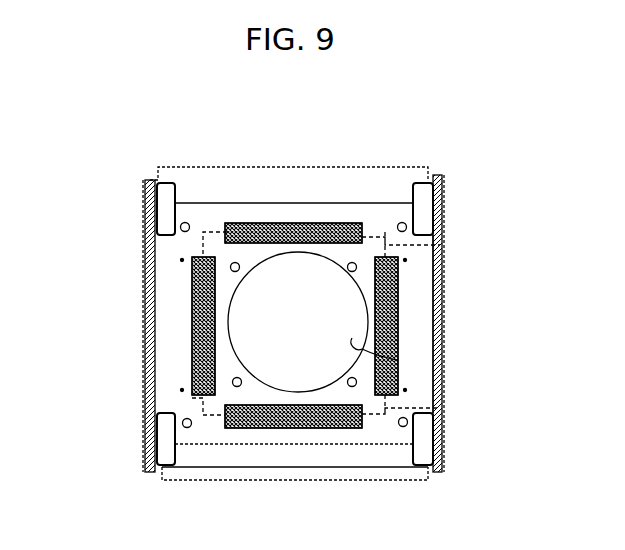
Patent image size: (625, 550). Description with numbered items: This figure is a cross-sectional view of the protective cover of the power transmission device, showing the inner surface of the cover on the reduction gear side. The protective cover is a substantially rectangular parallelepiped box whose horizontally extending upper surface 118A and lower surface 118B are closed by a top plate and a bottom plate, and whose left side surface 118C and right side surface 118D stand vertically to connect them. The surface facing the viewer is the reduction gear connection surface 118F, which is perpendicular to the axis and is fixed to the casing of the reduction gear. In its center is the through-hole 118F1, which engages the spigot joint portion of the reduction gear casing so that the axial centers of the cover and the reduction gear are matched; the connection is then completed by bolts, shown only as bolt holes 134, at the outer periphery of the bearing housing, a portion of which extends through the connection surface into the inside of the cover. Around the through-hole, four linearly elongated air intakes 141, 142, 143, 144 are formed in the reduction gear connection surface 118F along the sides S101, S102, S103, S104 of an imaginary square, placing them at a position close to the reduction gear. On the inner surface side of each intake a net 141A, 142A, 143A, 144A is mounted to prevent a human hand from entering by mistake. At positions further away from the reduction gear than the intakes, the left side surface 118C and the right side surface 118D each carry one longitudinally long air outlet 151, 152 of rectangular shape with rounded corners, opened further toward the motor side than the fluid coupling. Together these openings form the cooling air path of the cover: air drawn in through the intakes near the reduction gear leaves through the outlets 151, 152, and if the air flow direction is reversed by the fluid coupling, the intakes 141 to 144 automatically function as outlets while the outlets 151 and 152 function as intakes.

The upper surface 118A is at (372, 167).
The lower surface 118B is at (378, 480).
The left side surface 118C is at (145, 316).
The right side surface 118D is at (445, 280).
The reduction gear connection surface 118F is at (525, 232).
The through-hole 118F1 is at (398, 363).
The bolts (bolt holes) 134 is at (354, 263).
The air intake 141 is at (252, 222).
The net 141A is at (300, 222).
The air intake 142 is at (398, 303).
The net 142A is at (398, 347).
The air intake 143 is at (290, 428).
The net 143A is at (332, 428).
The air intake 144 is at (192, 352).
The net 144A is at (192, 303).
The air outlet 151 is at (145, 393).
The air outlet 152 is at (445, 388).
The side of imaginary square S101 is at (203, 232).
The side of imaginary square S102 is at (433, 408).
The side of imaginary square S103 is at (217, 428).
The side of imaginary square S104 is at (203, 398).